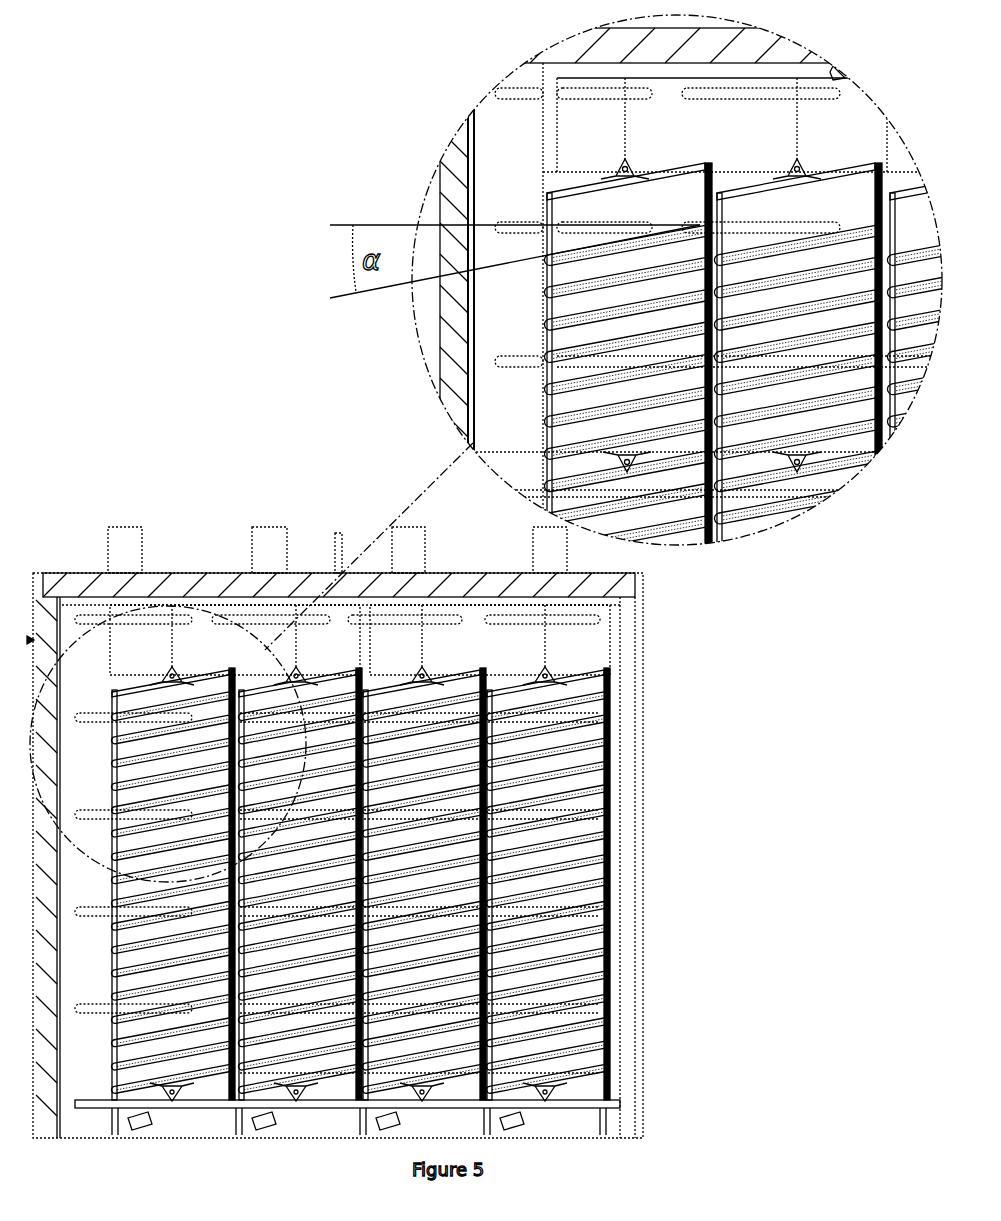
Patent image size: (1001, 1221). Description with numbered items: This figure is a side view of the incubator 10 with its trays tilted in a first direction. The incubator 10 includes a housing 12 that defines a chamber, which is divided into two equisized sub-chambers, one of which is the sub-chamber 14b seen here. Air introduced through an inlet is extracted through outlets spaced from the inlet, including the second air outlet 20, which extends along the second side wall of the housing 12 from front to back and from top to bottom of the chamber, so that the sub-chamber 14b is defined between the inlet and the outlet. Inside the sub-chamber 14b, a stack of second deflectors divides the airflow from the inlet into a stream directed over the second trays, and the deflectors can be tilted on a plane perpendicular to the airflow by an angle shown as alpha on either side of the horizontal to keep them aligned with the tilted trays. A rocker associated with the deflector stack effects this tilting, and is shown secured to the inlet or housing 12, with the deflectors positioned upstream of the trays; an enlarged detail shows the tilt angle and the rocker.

The incubator 10 is at (712, 660).
The housing 12 is at (92, 588).
The sub-chamber 14b is at (470, 640).
The second air outlet 20 is at (268, 640).